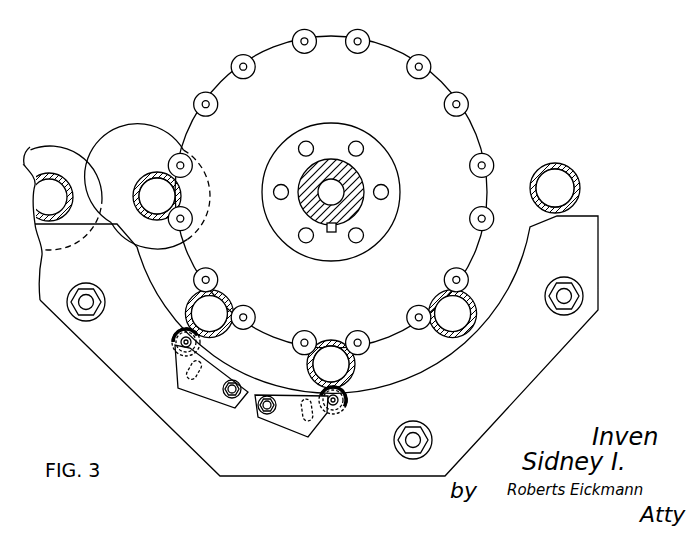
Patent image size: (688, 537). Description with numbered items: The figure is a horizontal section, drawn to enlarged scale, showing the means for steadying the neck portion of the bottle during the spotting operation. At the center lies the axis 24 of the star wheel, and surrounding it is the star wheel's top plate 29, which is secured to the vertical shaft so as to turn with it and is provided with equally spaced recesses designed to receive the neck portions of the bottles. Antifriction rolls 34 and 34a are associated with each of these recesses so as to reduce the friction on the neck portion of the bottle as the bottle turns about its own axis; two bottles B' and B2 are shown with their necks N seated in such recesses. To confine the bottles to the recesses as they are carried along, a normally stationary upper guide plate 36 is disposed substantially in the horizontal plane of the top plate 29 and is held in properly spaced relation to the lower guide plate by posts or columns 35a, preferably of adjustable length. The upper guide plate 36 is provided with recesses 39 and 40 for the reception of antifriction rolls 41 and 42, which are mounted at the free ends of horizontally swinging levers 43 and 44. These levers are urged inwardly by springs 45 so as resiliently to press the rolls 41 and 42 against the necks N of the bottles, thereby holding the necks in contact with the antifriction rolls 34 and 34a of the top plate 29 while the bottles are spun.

The axis of the star wheel 24 is at (353, 178).
The top plate 29 is at (402, 330).
The antifriction roll 34 is at (254, 72).
The antifriction roll 34a is at (218, 112).
The post or column 35a is at (583, 296).
The upper guide plate 36 is at (557, 350).
The recess 39 is at (175, 341).
The recess 40 is at (347, 406).
The antifriction roll 41 is at (178, 312).
The antifriction roll 42 is at (350, 388).
The horizontally swinging lever 43 is at (207, 390).
The horizontally swinging lever 44 is at (287, 420).
The spring 45 is at (323, 424).
The neck N is at (138, 190).
The bottle B' is at (67, 181).
The bottle B2 is at (148, 152).